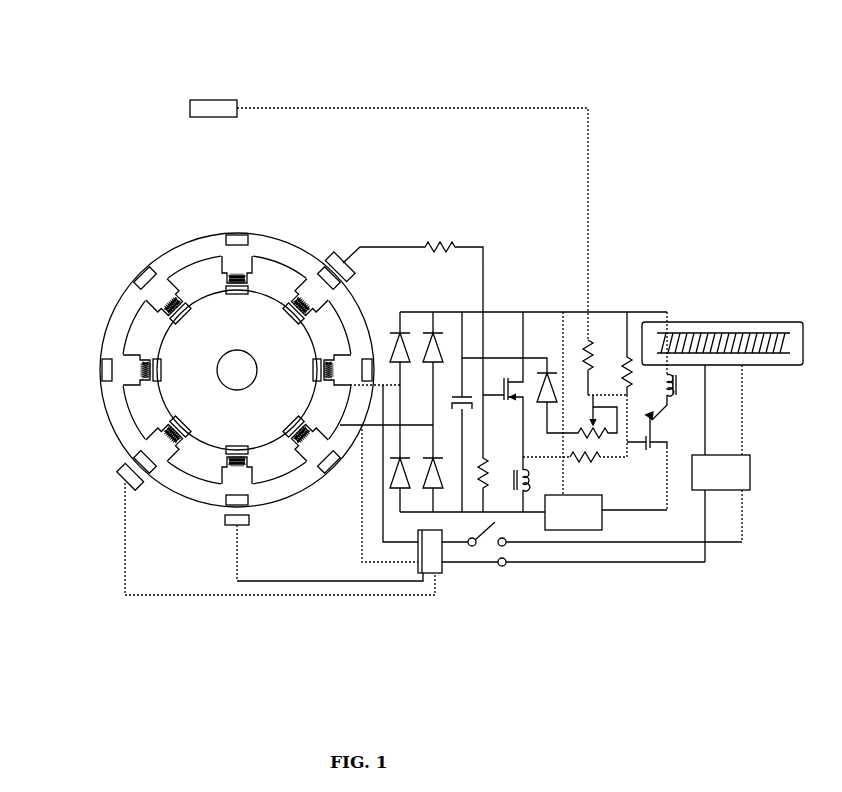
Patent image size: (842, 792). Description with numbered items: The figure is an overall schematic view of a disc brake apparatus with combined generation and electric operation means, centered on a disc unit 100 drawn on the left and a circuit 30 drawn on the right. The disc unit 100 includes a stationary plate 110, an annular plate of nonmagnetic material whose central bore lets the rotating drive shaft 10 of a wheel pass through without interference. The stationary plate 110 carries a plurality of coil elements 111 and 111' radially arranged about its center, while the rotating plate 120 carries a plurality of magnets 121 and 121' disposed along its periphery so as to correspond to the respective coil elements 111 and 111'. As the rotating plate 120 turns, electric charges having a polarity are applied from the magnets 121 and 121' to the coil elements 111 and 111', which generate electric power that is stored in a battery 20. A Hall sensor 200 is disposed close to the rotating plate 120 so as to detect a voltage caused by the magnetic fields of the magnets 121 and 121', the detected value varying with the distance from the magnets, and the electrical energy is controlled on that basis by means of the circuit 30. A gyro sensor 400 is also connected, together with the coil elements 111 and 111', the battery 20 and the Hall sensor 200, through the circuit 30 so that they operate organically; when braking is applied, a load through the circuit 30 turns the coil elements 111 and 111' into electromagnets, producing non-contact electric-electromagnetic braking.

The disc unit 100 is at (178, 226).
The rotating drive shaft 10 is at (232, 372).
The stationary plate 110 is at (193, 478).
The coil element 111 is at (237, 337).
The coil element 111' is at (237, 315).
The rotating plate 120 is at (115, 310).
The magnet 121 is at (197, 336).
The magnet 121' is at (190, 348).
The Hall sensor 200 is at (351, 259).
The gyro sensor 400 is at (214, 104).
The battery 20 is at (725, 335).
The circuit 30 is at (618, 588).